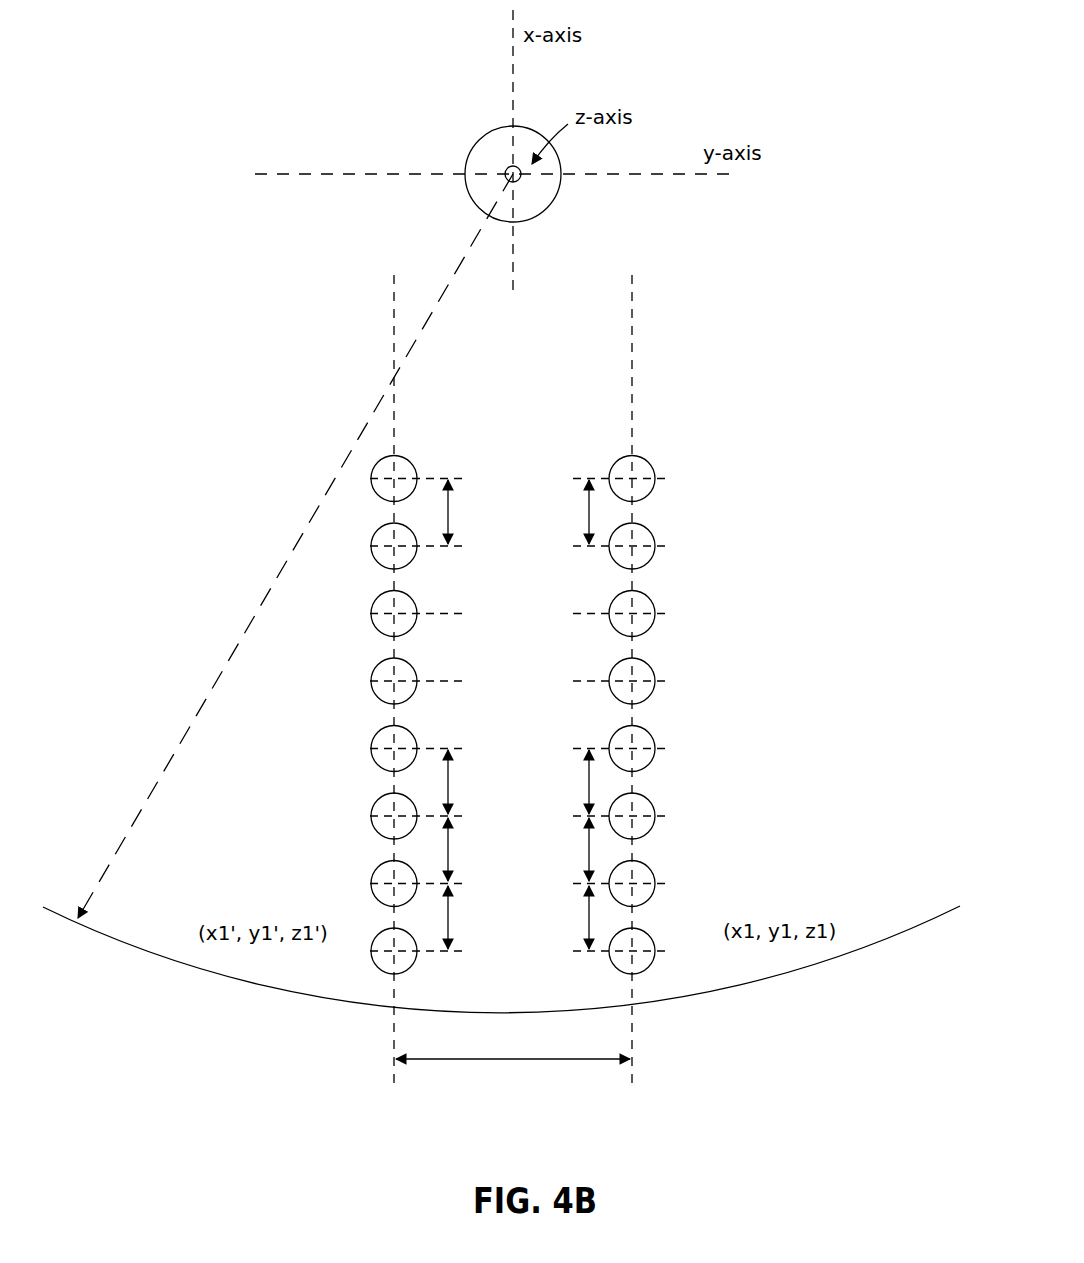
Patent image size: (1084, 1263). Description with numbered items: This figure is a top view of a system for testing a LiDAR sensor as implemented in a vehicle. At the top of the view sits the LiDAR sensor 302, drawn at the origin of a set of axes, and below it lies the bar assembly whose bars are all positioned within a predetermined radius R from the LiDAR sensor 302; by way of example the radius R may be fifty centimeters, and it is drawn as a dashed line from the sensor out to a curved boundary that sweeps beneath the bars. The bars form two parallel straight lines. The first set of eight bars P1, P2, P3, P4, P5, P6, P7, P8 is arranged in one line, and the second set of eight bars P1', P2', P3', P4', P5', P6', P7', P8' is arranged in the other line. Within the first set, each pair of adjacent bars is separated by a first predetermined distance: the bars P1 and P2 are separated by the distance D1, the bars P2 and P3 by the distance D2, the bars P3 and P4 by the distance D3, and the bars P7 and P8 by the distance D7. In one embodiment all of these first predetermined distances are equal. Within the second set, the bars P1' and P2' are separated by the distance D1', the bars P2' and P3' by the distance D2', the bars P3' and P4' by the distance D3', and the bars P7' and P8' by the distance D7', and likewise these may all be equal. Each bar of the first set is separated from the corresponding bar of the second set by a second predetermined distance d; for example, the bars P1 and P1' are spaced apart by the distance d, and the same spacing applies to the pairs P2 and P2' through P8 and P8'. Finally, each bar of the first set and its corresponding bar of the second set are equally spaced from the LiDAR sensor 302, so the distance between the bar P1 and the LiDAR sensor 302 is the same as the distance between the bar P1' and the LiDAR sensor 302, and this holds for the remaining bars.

The LiDAR sensor 302 is at (481, 138).
The bar P1 is at (638, 951).
The bar P2 is at (638, 884).
The bar P3 is at (638, 816).
The bar P4 is at (638, 749).
The bar P5 is at (638, 681).
The bar P6 is at (638, 614).
The bar P7 is at (638, 546).
The bar P8 is at (638, 485).
The bar P1' is at (397, 951).
The bar P2' is at (397, 884).
The bar P3' is at (397, 816).
The bar P4' is at (397, 749).
The bar P5' is at (397, 681).
The bar P6' is at (397, 614).
The bar P7' is at (397, 550).
The bar P8' is at (397, 485).
The first predetermined distance D1 is at (570, 917).
The first predetermined distance D2 is at (570, 849).
The first predetermined distance D3 is at (570, 782).
The first predetermined distance D7 is at (570, 512).
The first predetermined distance D1' is at (469, 917).
The first predetermined distance D2' is at (469, 849).
The first predetermined distance D3' is at (469, 782).
The first predetermined distance D7' is at (469, 512).
The predetermined radius R is at (295, 546).
The second predetermined distance d is at (513, 1075).